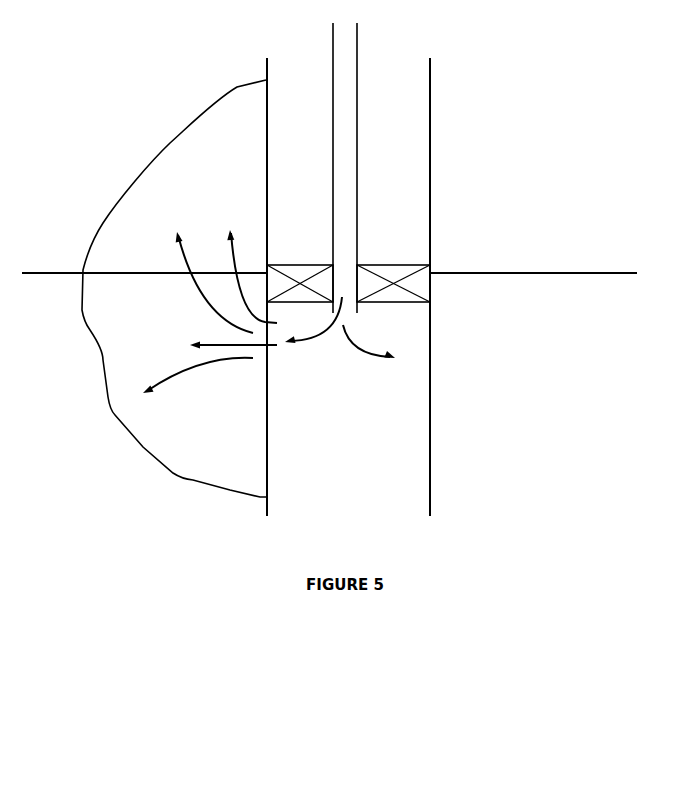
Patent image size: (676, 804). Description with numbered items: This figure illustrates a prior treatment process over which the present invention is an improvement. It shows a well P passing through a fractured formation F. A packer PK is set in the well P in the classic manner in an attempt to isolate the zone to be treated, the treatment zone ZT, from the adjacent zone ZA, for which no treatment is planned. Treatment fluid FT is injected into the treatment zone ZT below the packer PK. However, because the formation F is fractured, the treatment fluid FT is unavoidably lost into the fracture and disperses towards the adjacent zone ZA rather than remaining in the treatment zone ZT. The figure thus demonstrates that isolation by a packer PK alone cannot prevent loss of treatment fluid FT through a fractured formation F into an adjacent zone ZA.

The well P is at (363, 168).
The packer PK is at (390, 259).
The adjacent zone ZA is at (329, 263).
The treatment zone ZT is at (533, 294).
The fractured formation F is at (174, 288).
The treatment fluid FT is at (268, 311).